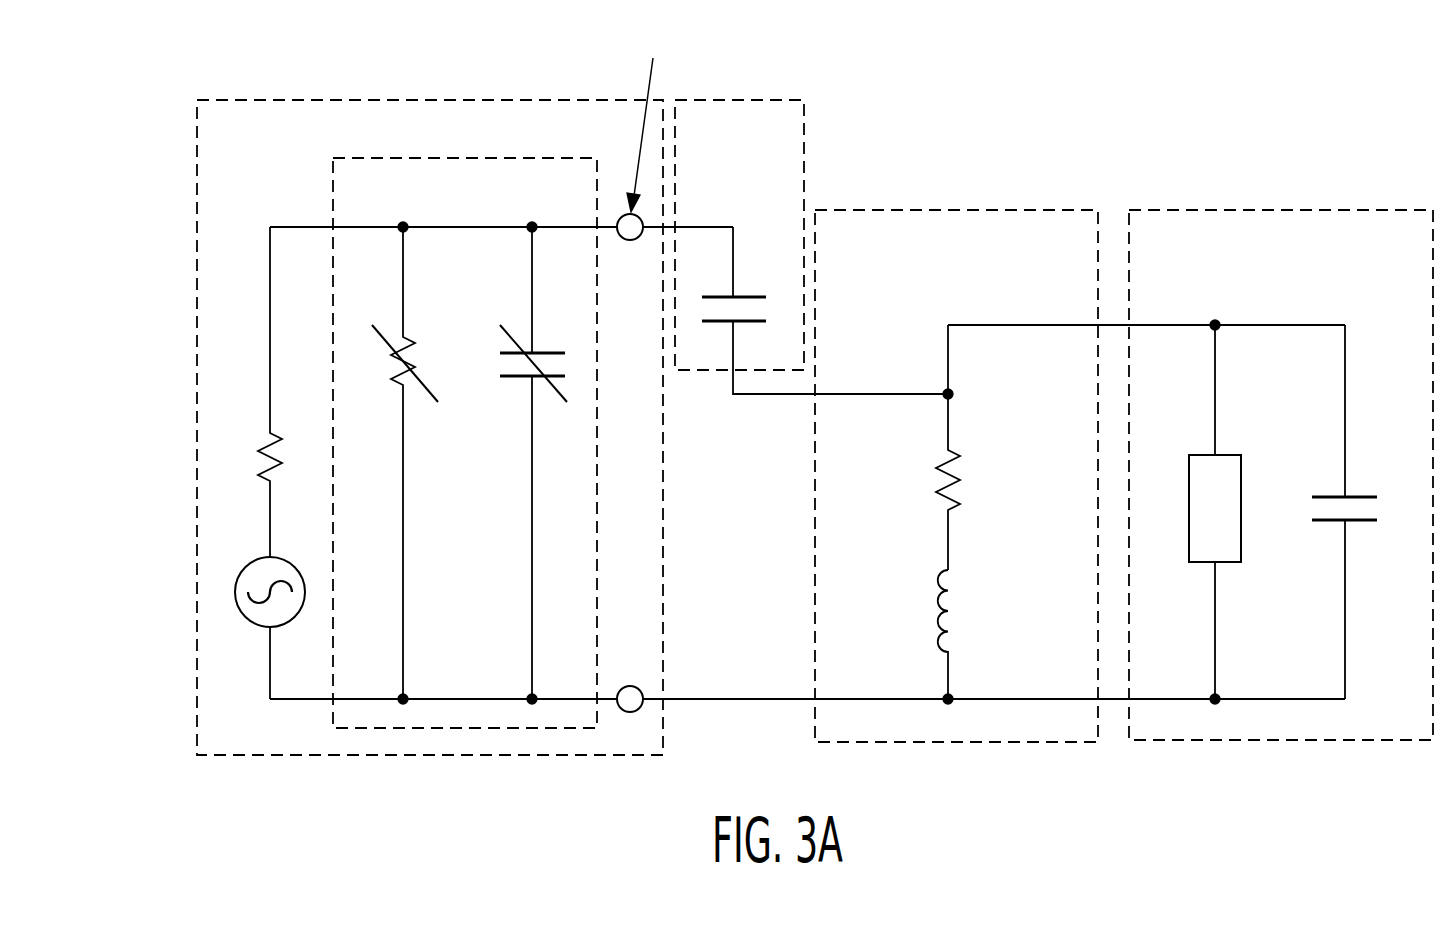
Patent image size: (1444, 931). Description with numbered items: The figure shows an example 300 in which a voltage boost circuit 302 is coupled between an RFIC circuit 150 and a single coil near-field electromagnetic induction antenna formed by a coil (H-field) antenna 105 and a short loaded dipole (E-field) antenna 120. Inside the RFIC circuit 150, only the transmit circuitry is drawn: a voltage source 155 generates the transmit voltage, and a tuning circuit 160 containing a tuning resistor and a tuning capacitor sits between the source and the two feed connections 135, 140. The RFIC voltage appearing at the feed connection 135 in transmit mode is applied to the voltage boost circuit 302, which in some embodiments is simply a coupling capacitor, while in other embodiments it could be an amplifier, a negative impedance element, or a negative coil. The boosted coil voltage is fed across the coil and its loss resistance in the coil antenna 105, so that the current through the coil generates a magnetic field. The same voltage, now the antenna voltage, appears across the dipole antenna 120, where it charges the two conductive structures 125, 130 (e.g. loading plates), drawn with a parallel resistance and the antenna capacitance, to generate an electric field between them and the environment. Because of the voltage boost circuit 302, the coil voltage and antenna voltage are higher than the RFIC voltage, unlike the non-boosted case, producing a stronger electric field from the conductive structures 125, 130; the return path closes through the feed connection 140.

The example 300 is at (168, 88).
The RFIC circuit 150 is at (515, 100).
The tuning circuit 160 is at (333, 179).
The voltage boost circuit 302 is at (805, 125).
The coil (H-field) antenna 105 is at (1020, 210).
The short loaded dipole (E-field) antenna 120 is at (1382, 210).
The feed connection 135 is at (630, 241).
The feed connection 140 is at (630, 686).
The voltage source 155 is at (243, 614).
The conductive structure 125 is at (1360, 496).
The conductive structure 130 is at (1360, 523).